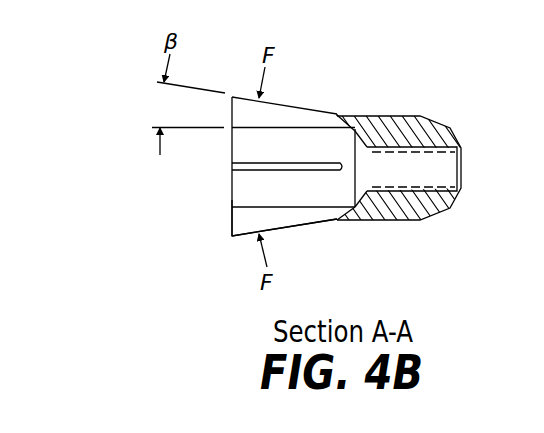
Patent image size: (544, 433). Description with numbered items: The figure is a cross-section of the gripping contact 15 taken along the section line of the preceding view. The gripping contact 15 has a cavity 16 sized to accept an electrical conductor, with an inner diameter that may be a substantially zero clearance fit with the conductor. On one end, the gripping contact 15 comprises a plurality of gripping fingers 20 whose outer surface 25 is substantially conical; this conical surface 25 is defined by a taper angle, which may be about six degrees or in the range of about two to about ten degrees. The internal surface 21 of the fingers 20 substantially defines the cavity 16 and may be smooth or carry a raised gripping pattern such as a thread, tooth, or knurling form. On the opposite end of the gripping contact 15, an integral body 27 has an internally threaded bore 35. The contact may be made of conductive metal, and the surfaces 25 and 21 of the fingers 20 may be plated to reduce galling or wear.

The gripping contact 15 is at (352, 73).
The cavity 16 is at (247, 188).
The gripping fingers 20 is at (232, 226).
The internal surface 21 is at (257, 128).
The outer surface 25 is at (297, 226).
The integral body 27 is at (410, 118).
The internally threaded bore 35 is at (442, 154).